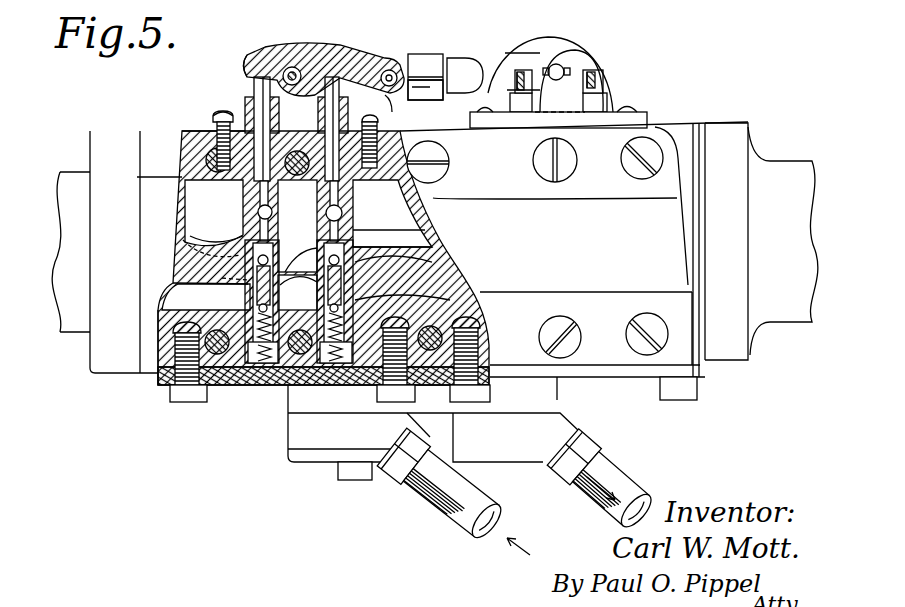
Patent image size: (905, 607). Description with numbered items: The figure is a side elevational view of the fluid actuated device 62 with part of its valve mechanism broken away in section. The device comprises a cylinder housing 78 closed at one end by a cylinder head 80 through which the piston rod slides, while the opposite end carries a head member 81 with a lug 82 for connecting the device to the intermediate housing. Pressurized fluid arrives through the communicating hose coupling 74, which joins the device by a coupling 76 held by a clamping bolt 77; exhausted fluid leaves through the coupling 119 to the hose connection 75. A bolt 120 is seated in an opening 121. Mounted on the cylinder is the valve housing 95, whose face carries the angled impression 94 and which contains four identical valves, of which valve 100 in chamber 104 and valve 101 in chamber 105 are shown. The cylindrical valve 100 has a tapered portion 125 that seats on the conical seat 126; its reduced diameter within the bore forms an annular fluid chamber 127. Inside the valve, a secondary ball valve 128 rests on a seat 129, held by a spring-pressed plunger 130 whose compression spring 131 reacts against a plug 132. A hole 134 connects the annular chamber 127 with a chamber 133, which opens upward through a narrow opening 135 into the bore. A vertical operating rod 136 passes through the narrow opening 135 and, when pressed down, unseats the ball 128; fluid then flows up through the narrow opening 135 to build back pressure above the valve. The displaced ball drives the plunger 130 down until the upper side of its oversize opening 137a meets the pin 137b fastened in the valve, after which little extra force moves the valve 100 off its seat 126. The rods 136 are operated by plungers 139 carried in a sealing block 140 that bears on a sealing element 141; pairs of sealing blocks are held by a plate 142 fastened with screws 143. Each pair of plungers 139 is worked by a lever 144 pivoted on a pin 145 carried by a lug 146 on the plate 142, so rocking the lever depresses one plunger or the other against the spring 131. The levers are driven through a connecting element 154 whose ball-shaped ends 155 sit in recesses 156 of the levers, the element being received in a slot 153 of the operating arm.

The fluid actuated device 62 is at (716, 104).
The communicating hose coupling 74 is at (445, 522).
The hose connection 75 is at (620, 476).
The coupling 76 is at (298, 449).
The clamping bolt 77 is at (348, 480).
The cylinder housing 78 is at (673, 124).
The cylinder head 80 is at (737, 365).
The head member 81 is at (105, 131).
The lug 82 is at (558, 64).
The angled impression 94 is at (200, 252).
The valve housing 95 is at (673, 353).
The valve 100 is at (178, 290).
The valve 101 is at (440, 242).
The valve chamber 104 is at (170, 314).
The valve chamber 105 is at (380, 278).
The coupling 119 is at (565, 413).
The bolt 120 is at (508, 477).
The opening 121 is at (262, 220).
The tapered portion 125 is at (214, 213).
The conical seat 126 is at (326, 214).
The annular fluid chamber 127 is at (300, 292).
The secondary ball valve 128 is at (353, 222).
The seat 129 is at (212, 225).
The spring-pressed plunger 130 is at (250, 296).
The compression spring 131 is at (289, 398).
The plug 132 is at (268, 425).
The chamber 133 is at (356, 262).
The hole 134 is at (212, 273).
The narrow opening 135 is at (352, 208).
The vertical operating rod 136 is at (352, 186).
The oversize opening 137a is at (172, 340).
The pin 137b is at (226, 387).
The plunger 139 is at (232, 112).
The sealing block 140 is at (200, 131).
The sealing element 141 is at (139, 181).
The plate 142 is at (222, 112).
The screw 143 is at (215, 128).
The lever 144 is at (362, 58).
The pin 145 is at (302, 57).
The lug 146 is at (275, 47).
The slot 153 is at (428, 54).
The connecting element 154 is at (437, 100).
The ball-shaped end 155 is at (405, 57).
The recess 156 is at (406, 113).